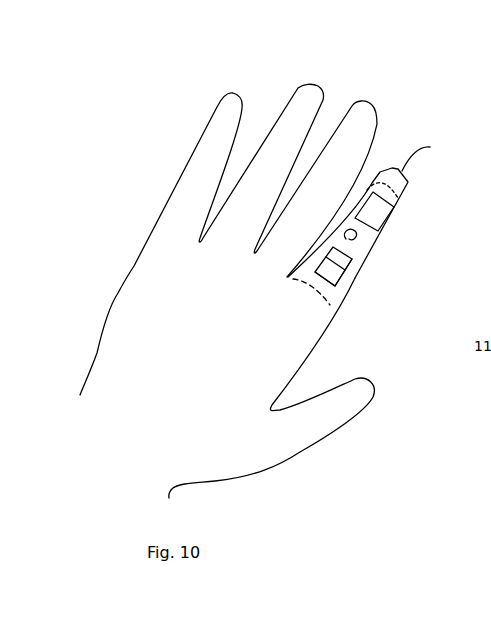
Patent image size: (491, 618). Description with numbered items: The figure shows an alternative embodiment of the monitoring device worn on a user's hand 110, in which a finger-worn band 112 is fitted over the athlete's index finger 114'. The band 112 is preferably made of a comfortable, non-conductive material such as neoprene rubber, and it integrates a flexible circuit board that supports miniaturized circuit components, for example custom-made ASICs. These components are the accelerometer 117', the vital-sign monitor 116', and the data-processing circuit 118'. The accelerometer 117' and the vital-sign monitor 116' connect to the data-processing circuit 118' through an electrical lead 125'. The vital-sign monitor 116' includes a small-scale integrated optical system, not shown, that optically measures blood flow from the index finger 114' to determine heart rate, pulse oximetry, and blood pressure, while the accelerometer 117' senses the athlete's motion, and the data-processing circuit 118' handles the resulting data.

The hand 110 is at (85, 387).
The finger-worn band 112 is at (340, 300).
The index finger 114' is at (423, 173).
The vital-sign monitor 116' is at (422, 211).
The accelerometer 117' is at (374, 266).
The data-processing circuit 118' is at (375, 281).
The electrical lead 125' is at (394, 244).